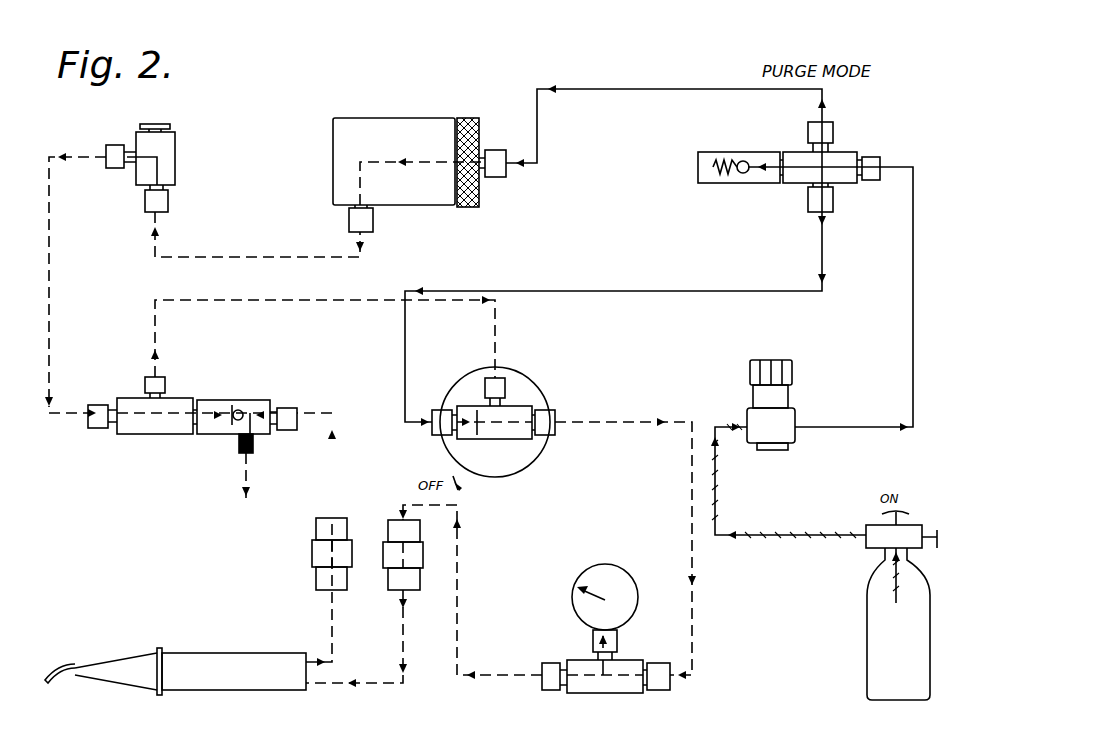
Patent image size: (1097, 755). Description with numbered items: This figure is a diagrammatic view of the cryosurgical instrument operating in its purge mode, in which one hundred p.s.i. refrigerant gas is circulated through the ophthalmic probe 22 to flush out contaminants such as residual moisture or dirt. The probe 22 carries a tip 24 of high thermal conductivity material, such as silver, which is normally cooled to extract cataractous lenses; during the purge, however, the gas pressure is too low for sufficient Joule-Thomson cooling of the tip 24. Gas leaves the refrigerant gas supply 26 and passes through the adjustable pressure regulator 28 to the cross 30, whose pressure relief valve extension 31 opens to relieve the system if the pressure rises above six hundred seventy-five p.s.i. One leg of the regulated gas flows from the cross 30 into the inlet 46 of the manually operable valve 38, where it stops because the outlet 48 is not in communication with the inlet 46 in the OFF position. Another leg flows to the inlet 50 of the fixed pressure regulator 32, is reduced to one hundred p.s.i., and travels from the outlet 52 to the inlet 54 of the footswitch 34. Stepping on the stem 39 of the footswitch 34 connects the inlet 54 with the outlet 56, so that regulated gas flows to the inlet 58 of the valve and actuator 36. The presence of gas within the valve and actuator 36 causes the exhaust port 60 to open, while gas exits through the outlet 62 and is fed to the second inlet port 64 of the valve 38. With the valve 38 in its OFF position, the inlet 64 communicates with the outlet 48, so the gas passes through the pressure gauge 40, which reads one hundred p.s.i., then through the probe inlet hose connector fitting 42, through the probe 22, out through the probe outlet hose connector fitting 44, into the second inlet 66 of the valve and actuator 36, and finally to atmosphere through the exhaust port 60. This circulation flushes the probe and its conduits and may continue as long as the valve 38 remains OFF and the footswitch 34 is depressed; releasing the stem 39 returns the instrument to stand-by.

The ophthalmic probe 22 is at (217, 650).
The tip 24 is at (45, 672).
The refrigerant gas supply 26 is at (875, 622).
The adjustable pressure regulator 28 is at (783, 397).
The cross 30 is at (850, 182).
The pressure relief valve extension 31 is at (762, 178).
The fixed pressure regulator 32 is at (432, 195).
The footswitch 34 is at (170, 173).
The valve and actuator 36 is at (217, 425).
The manually operable valve 38 is at (527, 460).
The stem 39 is at (152, 125).
The pressure gauge 40 is at (632, 587).
The probe inlet hose connector fitting 42 is at (420, 558).
The probe outlet hose connector fitting 44 is at (320, 533).
The inlet 46 is at (440, 412).
The outlet 48 is at (553, 413).
The inlet 50 is at (493, 157).
The outlet 52 is at (372, 223).
The inlet 54 is at (145, 202).
The outlet 56 is at (115, 170).
The inlet 58 is at (93, 405).
The exhaust port 60 is at (252, 448).
The outlet 62 is at (167, 380).
The second inlet port 64 is at (505, 388).
The second inlet 66 is at (287, 408).